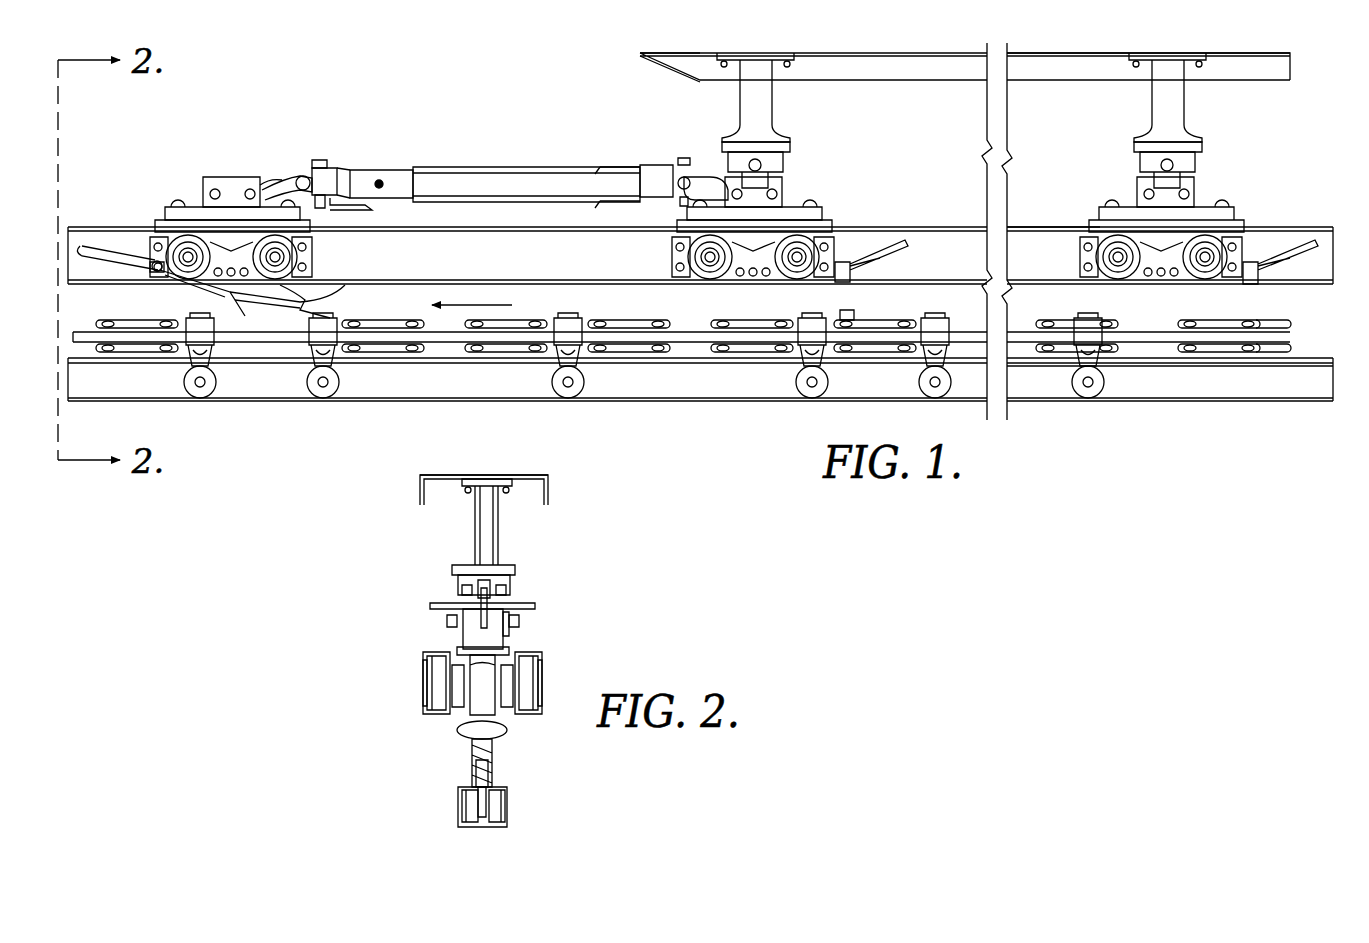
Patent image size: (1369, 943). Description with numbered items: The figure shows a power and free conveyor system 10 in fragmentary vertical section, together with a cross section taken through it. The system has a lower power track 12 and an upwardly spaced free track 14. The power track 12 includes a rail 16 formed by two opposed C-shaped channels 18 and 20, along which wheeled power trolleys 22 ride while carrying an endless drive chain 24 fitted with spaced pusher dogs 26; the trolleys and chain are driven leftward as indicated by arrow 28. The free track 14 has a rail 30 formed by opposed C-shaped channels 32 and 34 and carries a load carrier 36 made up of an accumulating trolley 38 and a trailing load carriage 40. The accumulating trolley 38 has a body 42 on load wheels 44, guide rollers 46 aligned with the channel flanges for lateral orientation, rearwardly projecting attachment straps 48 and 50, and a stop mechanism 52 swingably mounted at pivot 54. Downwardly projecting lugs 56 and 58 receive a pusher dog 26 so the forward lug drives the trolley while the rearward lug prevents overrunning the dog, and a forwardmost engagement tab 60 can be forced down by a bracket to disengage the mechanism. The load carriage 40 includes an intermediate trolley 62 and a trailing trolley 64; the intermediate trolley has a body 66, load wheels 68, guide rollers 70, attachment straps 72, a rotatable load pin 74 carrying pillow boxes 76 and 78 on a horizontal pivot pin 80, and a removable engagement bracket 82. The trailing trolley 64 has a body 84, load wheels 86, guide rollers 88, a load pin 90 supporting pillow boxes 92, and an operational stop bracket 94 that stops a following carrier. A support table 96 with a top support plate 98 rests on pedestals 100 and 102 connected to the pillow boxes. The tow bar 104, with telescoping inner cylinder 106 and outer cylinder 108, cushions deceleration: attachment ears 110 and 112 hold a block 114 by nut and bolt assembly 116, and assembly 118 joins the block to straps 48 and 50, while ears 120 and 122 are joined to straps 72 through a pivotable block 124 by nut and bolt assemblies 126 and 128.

In FIG. 1, the conveyor system 10 is at (1292, 128).
In FIG. 1, the power track 12 is at (700, 430).
In FIG. 2, the power track 12 is at (496, 804).
In FIG. 1, the free track 14 is at (1191, 175).
In FIG. 2, the free track 14 is at (493, 689).
In FIG. 1, the rail 16 is at (1185, 402).
In FIG. 2, the rail 16 is at (507, 792).
In FIG. 1, the C-shaped channel 18 is at (1128, 392).
In FIG. 2, the C-shaped channel 18 is at (458, 806).
In FIG. 2, the C-shaped channel 20 is at (505, 800).
In FIG. 1, the power trolley 22 is at (184, 372).
In FIG. 2, the power trolley 22 is at (478, 815).
In FIG. 1, the drive chain 24 is at (700, 342).
In FIG. 2, the drive chain 24 is at (474, 766).
In FIG. 1, the pusher dog 26 is at (872, 318).
In FIG. 2, the pusher dog 26 is at (494, 752).
In FIG. 1, the arrow 28 is at (512, 305).
In FIG. 1, the rail 30 is at (1336, 276).
In FIG. 2, the rail 30 is at (423, 706).
In FIG. 1, the C-shaped channel 32 is at (1020, 226).
In FIG. 2, the C-shaped channel 32 is at (425, 687).
In FIG. 2, the C-shaped channel 34 is at (542, 692).
In FIG. 1, the load carrier 36 is at (640, 52).
In FIG. 2, the load carrier 36 is at (416, 490).
In FIG. 1, the accumulating trolley 38 is at (200, 208).
In FIG. 2, the accumulating trolley 38 is at (432, 605).
In FIG. 1, the load carriage 40 is at (785, 107).
In FIG. 2, the load carriage 40 is at (527, 522).
In FIG. 1, the body 42 is at (230, 200).
In FIG. 2, the body 42 is at (468, 642).
In FIG. 1, the load wheel 44 is at (150, 245).
In FIG. 2, the load wheel 44 is at (538, 665).
In FIG. 1, the guide roller 46 is at (160, 224).
In FIG. 2, the guide roller 46 is at (505, 650).
In FIG. 2, the attachment strap 48 is at (460, 622).
In FIG. 1, the attachment strap 50 is at (265, 180).
In FIG. 2, the attachment strap 50 is at (508, 622).
In FIG. 1, the stop mechanism 52 is at (305, 290).
In FIG. 2, the stop mechanism 52 is at (502, 728).
In FIG. 1, the pivot 54 is at (155, 273).
In FIG. 1, the lug 56 is at (225, 292).
In FIG. 1, the lug 58 is at (278, 303).
In FIG. 1, the engagement tab 60 is at (85, 246).
In FIG. 1, the intermediate trolley 62 is at (760, 221).
In FIG. 1, the trailing trolley 64 is at (1190, 190).
In FIG. 1, the body 66 is at (753, 278).
In FIG. 1, the load wheel 68 is at (708, 275).
In FIG. 1, the guide roller 70 is at (825, 226).
In FIG. 1, the attachment strap 72 is at (730, 193).
In FIG. 1, the load pin 74 is at (770, 166).
In FIG. 2, the load pin 74 is at (465, 575).
In FIG. 2, the pillow box 76 is at (460, 582).
In FIG. 1, the pillow box 78 is at (790, 150).
In FIG. 2, the pillow box 78 is at (516, 568).
In FIG. 1, the pivot pin 80 is at (760, 158).
In FIG. 2, the pivot pin 80 is at (512, 593).
In FIG. 1, the stop mechanism engagement bracket 82 is at (852, 266).
In FIG. 1, the body 84 is at (1162, 278).
In FIG. 1, the load wheel 86 is at (1118, 275).
In FIG. 1, the guide roller 88 is at (1097, 218).
In FIG. 1, the load pin 90 is at (1148, 170).
In FIG. 1, the pillow box 92 is at (1135, 148).
In FIG. 1, the stop bracket 94 is at (1262, 258).
In FIG. 1, the support table 96 is at (1153, 92).
In FIG. 1, the top support plate 98 is at (1025, 52).
In FIG. 2, the top support plate 98 is at (530, 475).
In FIG. 1, the pedestal 100 is at (765, 62).
In FIG. 2, the pedestal 100 is at (498, 510).
In FIG. 1, the pedestal 102 is at (1172, 58).
In FIG. 1, the tow bar 104 is at (526, 143).
In FIG. 1, the inner cylinder 106 is at (390, 172).
In FIG. 1, the outer cylinder 108 is at (520, 175).
In FIG. 1, the attachment ear 110 is at (348, 168).
In FIG. 1, the attachment ear 112 is at (345, 204).
In FIG. 1, the block 114 is at (330, 168).
In FIG. 1, the nut and bolt assembly 116 is at (320, 160).
In FIG. 2, the nut and bolt assembly 116 is at (480, 588).
In FIG. 1, the nut and bolt assembly 118 is at (300, 178).
In FIG. 1, the attachment ear 120 is at (645, 172).
In FIG. 1, the attachment ear 122 is at (640, 201).
In FIG. 1, the block 124 is at (655, 175).
In FIG. 1, the nut and bolt assembly 126 is at (683, 160).
In FIG. 1, the nut and bolt assembly 128 is at (684, 177).